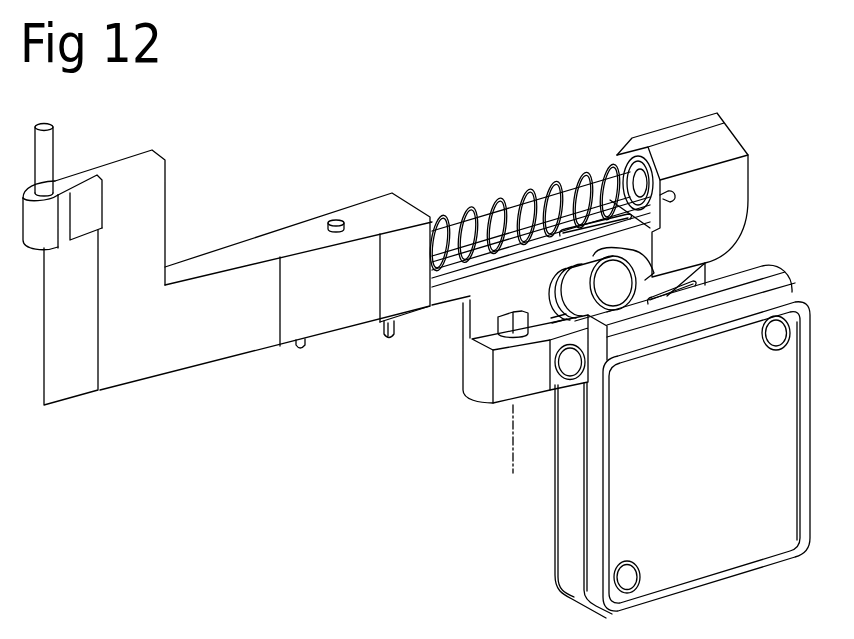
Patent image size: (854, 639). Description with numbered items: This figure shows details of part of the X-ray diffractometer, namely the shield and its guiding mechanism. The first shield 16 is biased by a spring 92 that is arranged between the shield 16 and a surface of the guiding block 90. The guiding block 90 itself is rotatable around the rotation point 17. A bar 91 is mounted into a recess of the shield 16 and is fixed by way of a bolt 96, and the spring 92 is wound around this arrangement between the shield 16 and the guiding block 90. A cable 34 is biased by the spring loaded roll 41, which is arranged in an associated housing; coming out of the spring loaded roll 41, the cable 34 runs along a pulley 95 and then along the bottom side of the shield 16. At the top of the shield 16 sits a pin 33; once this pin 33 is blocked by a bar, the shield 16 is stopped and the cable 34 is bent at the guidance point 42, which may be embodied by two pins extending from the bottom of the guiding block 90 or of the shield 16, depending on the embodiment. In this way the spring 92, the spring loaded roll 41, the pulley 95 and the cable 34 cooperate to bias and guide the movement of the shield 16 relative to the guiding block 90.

The first shield 16 is at (152, 207).
The pin 33 is at (43, 145).
The bolt 96 is at (335, 220).
The cable 34 is at (302, 342).
The guidance point 42 is at (392, 327).
The rotation point 17 is at (515, 445).
The bar 91 is at (533, 207).
The spring 92 is at (467, 203).
The guiding block 90 is at (676, 130).
The pulley 95 is at (617, 288).
The spring loaded roll 41 is at (783, 283).